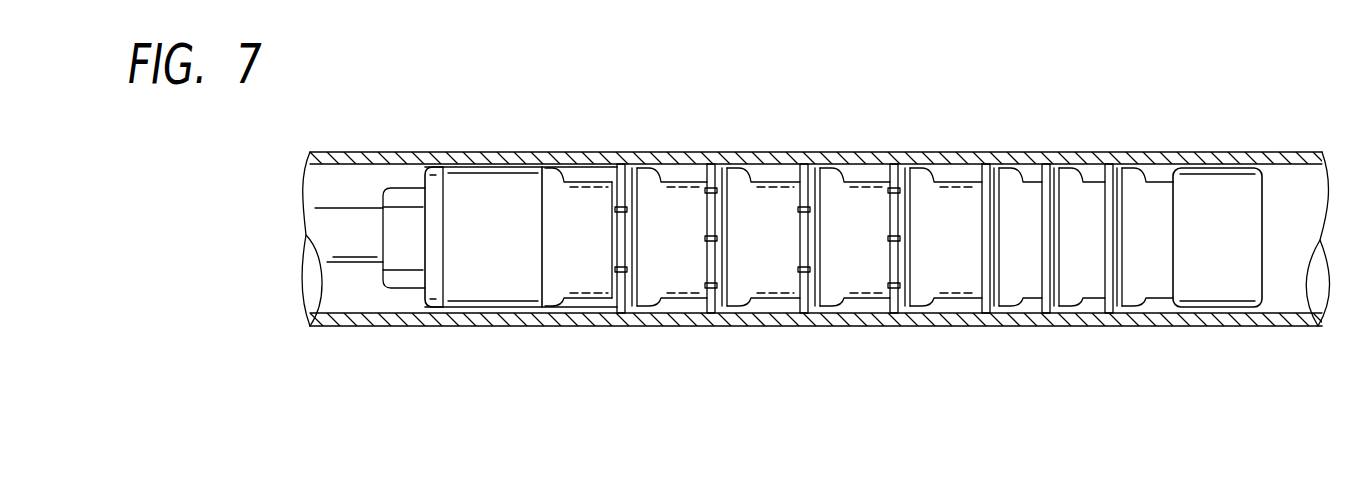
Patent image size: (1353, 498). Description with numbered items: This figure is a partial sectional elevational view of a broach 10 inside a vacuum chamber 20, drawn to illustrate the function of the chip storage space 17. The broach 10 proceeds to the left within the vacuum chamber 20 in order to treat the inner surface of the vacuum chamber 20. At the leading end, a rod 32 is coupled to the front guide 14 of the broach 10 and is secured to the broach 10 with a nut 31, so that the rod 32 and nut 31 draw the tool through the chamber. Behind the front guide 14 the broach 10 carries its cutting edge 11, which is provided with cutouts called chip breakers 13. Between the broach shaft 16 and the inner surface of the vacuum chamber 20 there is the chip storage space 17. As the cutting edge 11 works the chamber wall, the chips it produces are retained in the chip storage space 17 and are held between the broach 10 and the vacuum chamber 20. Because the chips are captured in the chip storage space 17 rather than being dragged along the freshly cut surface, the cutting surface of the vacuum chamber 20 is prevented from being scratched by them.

The broach 10 is at (1229, 276).
The cutting edge 11 is at (899, 170).
The chip breakers 13 is at (627, 210).
The front guide 14 is at (508, 185).
The broach shaft 16 is at (578, 287).
The chip storage space 17 is at (664, 170).
The vacuum chamber 20 is at (372, 326).
The nut 31 is at (410, 190).
The rod 32 is at (340, 222).